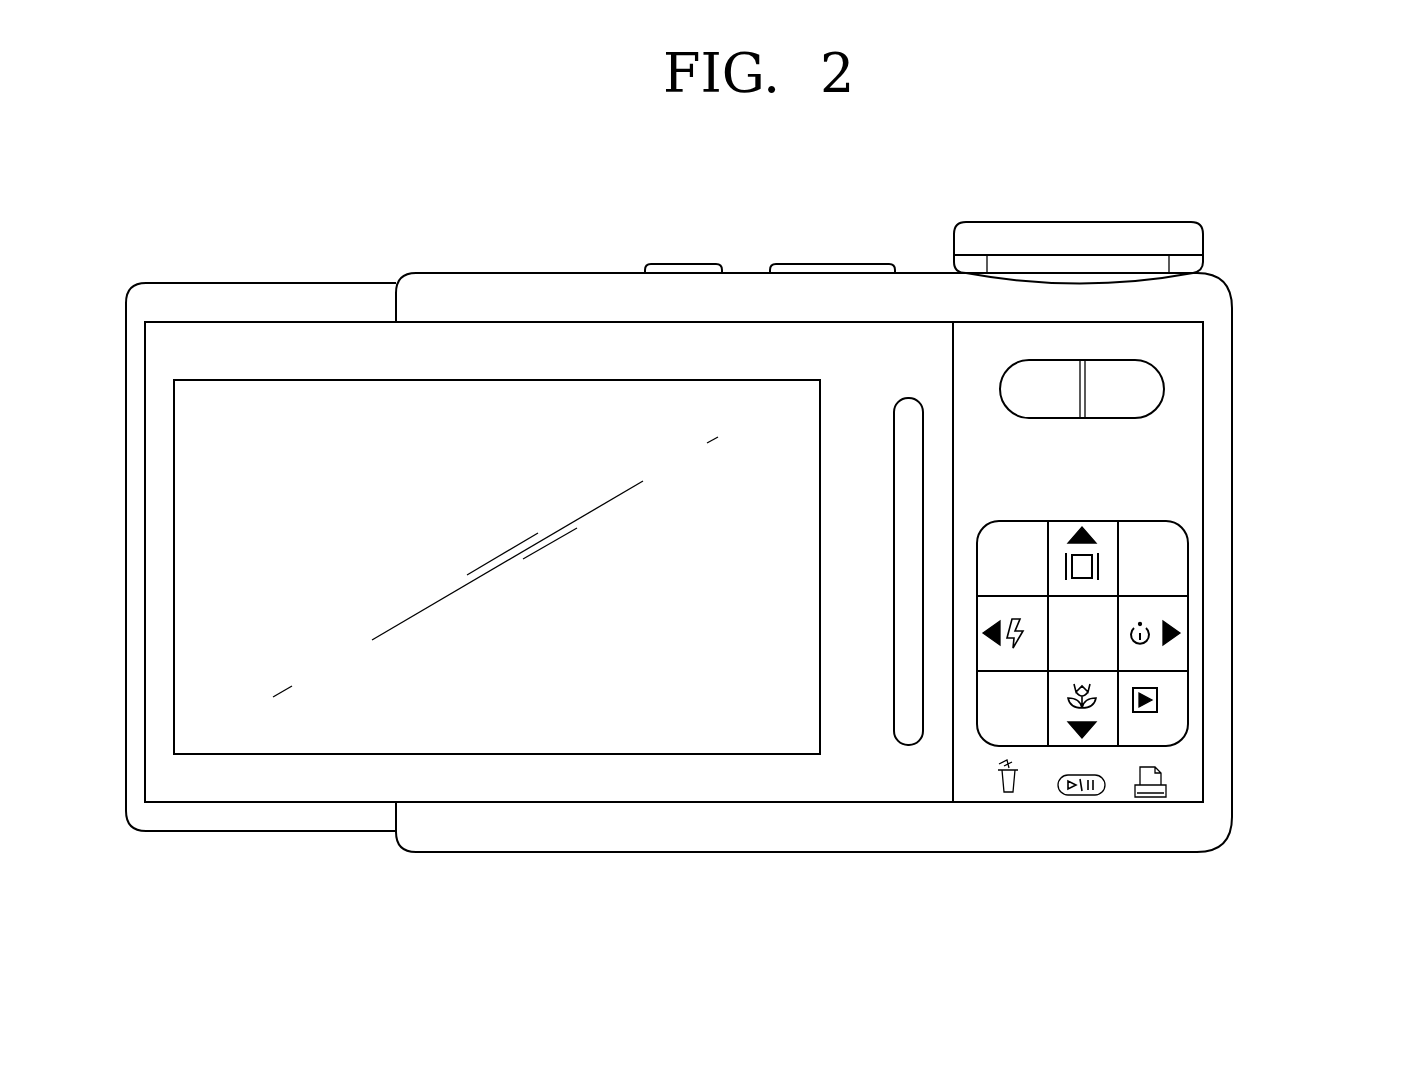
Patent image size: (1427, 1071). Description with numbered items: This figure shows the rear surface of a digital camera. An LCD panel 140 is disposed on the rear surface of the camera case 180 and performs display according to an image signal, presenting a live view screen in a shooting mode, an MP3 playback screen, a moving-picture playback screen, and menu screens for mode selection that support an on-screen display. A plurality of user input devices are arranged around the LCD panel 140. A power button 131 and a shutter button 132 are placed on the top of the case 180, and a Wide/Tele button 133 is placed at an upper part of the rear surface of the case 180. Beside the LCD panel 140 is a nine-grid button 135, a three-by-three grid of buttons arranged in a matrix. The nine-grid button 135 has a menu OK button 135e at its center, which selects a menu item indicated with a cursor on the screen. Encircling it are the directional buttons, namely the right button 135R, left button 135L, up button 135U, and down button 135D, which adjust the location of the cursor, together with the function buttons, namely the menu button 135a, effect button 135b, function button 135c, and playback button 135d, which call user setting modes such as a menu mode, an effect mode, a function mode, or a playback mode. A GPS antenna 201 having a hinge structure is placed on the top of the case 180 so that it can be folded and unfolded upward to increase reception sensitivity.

The camera case 180 is at (263, 296).
The LCD panel 140 is at (278, 744).
The power button 131 is at (686, 262).
The shutter button 132 is at (833, 262).
The GPS antenna 201 is at (1192, 238).
The Wide/Tele (W/T) button 133 is at (1165, 383).
The 9-grid button 135 is at (1200, 757).
The menu button 135a is at (1018, 530).
The 'up' button 135U is at (1108, 541).
The effect button 135b is at (1177, 566).
The 'left' button 135L is at (993, 657).
The 'menu OK' button 135e is at (1100, 655).
The 'right' button 135R is at (1180, 656).
The function button 135c is at (998, 733).
The 'down' button 135D is at (1100, 737).
The playback button 135d is at (1163, 733).